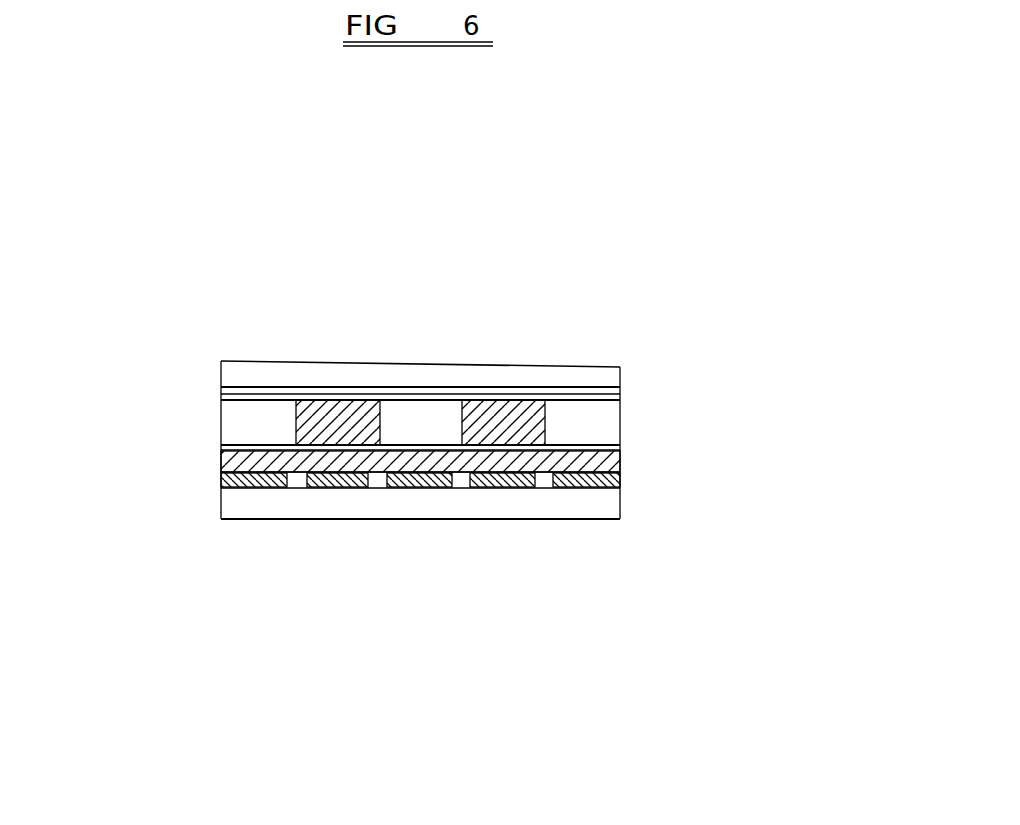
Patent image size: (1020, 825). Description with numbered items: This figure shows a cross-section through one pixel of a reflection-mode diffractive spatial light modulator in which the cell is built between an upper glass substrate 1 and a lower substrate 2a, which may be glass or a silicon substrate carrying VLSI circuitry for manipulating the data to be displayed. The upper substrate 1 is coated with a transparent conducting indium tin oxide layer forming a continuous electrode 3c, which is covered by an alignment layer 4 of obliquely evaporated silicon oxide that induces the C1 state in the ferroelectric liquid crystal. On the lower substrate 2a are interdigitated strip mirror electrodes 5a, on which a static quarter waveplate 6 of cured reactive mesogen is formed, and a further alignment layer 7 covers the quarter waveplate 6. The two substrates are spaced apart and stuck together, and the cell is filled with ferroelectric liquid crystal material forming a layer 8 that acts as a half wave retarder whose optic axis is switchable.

The upper glass substrate 1 is at (450, 364).
The continuous electrode 3c is at (357, 392).
The alignment layer 4 is at (575, 398).
The ferroelectric liquid crystal layer 8 is at (676, 390).
The further alignment layer 7 is at (607, 448).
The static quarter waveplate 6 is at (502, 458).
The interdigitated strip mirror electrodes 5a is at (322, 486).
The silicon substrate carrying VLSI circuitry 2a is at (402, 502).